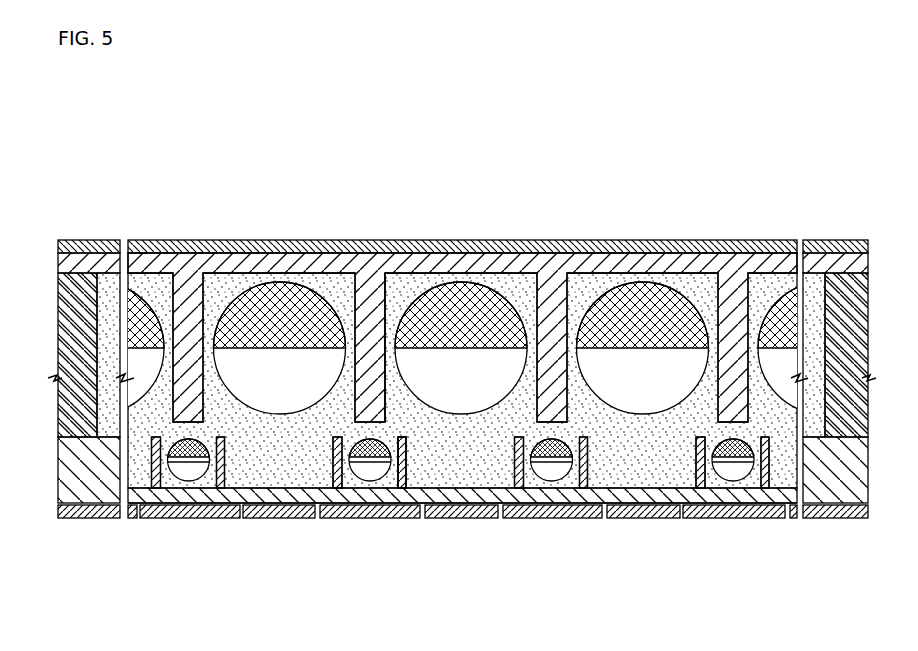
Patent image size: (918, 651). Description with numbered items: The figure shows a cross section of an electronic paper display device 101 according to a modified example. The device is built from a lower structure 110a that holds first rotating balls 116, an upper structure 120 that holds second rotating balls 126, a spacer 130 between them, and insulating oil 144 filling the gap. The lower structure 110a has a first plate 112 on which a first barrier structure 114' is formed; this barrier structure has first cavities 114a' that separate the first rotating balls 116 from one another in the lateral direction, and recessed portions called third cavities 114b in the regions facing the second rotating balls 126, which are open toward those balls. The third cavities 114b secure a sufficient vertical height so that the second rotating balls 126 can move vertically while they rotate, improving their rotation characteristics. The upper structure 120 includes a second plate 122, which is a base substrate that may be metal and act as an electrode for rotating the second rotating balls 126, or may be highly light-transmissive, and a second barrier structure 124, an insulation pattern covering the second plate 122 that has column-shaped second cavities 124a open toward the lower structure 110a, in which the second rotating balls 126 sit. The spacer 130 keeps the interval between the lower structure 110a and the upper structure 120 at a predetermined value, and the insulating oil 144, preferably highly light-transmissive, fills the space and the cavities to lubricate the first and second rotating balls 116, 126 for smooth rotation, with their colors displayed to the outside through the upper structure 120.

The electronic paper display device 101 is at (103, 90).
The lower structure 110a is at (463, 526).
The first plate 112 is at (730, 515).
The first barrier structure 114' is at (462, 534).
The first cavities 114a' is at (438, 508).
The third cavities 114b is at (527, 503).
The first rotating balls 116 is at (368, 493).
The upper structure 120 is at (463, 287).
The second plate 122 is at (625, 243).
The second barrier structure 124 is at (553, 262).
The second cavities 124a is at (388, 296).
The second rotating balls 126 is at (278, 278).
The spacer 130 is at (85, 288).
The insulating oil 144 is at (697, 283).